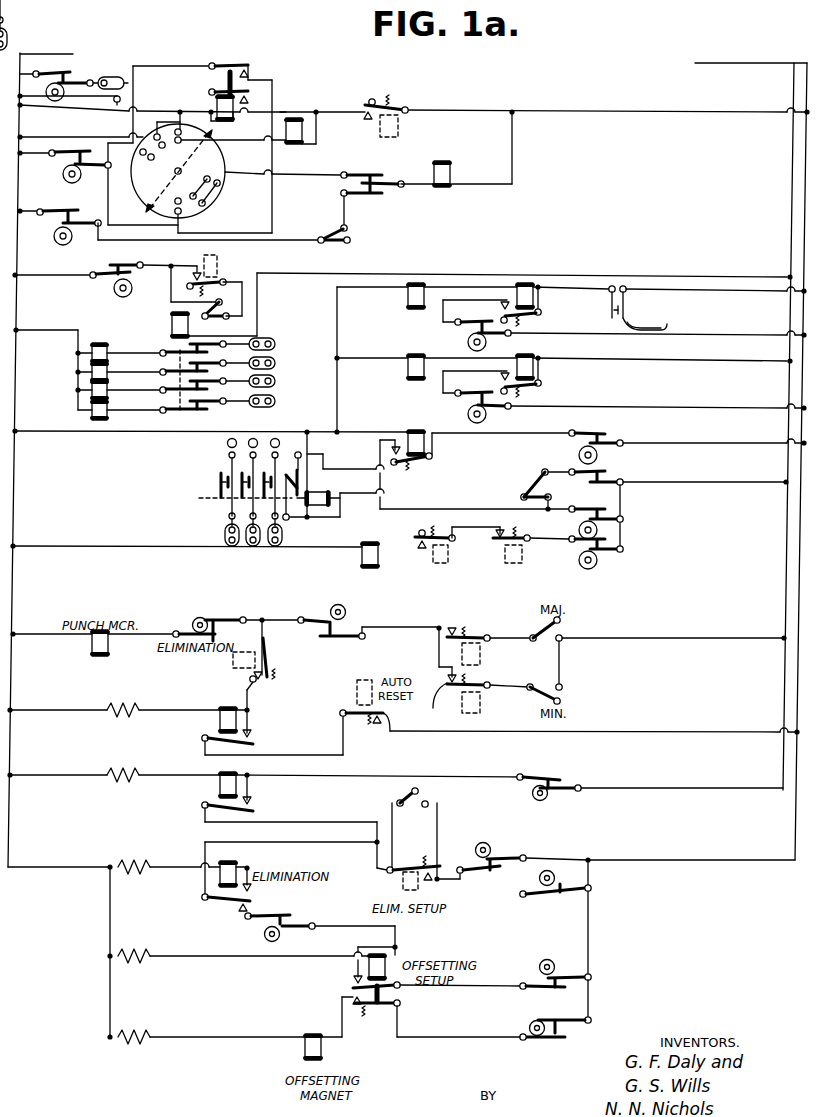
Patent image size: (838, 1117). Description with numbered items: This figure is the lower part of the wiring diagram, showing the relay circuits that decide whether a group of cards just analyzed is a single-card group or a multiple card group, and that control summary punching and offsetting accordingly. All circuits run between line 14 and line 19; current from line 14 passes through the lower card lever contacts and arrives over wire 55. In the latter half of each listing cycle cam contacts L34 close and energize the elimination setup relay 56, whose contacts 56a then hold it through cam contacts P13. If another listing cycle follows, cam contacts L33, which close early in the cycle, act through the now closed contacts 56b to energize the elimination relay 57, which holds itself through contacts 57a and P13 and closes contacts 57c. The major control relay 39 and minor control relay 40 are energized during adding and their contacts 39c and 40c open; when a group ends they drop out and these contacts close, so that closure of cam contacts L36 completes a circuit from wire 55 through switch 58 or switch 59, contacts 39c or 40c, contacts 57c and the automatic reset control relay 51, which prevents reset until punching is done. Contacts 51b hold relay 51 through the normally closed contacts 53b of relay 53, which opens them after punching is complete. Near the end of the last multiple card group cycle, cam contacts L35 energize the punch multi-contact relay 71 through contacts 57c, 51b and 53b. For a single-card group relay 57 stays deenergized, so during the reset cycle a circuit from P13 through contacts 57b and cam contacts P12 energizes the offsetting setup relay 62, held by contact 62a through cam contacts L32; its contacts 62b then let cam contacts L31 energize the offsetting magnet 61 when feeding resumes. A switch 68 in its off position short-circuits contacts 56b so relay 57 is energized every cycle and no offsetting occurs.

The line 14 is at (795, 822).
The line 19 is at (13, 510).
The wire 55 is at (794, 204).
The punch multi-contact relay 71 is at (99, 641).
The cam contacts L35 is at (222, 627).
The cam contacts L36 is at (340, 628).
The elimination relay 57 is at (231, 660).
The relay contacts 57a is at (250, 900).
The relay contacts 57b is at (238, 872).
The relay contacts 57c is at (264, 686).
The major control relay 39 is at (470, 650).
The relay contacts 39c is at (444, 626).
The minor control relay 40 is at (480, 698).
The relay contacts 40c is at (427, 704).
The switch 58 is at (566, 635).
The switch 59 is at (564, 690).
The relay 53 is at (361, 681).
The normally closed contacts 53b is at (385, 720).
The automatic reset control relay 51 is at (240, 720).
The relay contacts 51b is at (256, 744).
The elimination setup relay 56 is at (217, 788).
The relay contacts 56a is at (255, 808).
The relay contacts 56b is at (430, 862).
The switch 68 is at (433, 831).
The cam contacts L34 is at (562, 787).
The cam contacts L33 is at (492, 864).
The cam contacts L32 is at (575, 984).
The cam contacts L31 is at (560, 1028).
The cam contacts P12 is at (290, 922).
The cam contacts P13 is at (584, 891).
The offsetting setup relay 62 is at (380, 972).
The relay contact 62a is at (352, 984).
The relay contacts 62b is at (352, 998).
The offsetting magnet 61 is at (305, 1047).